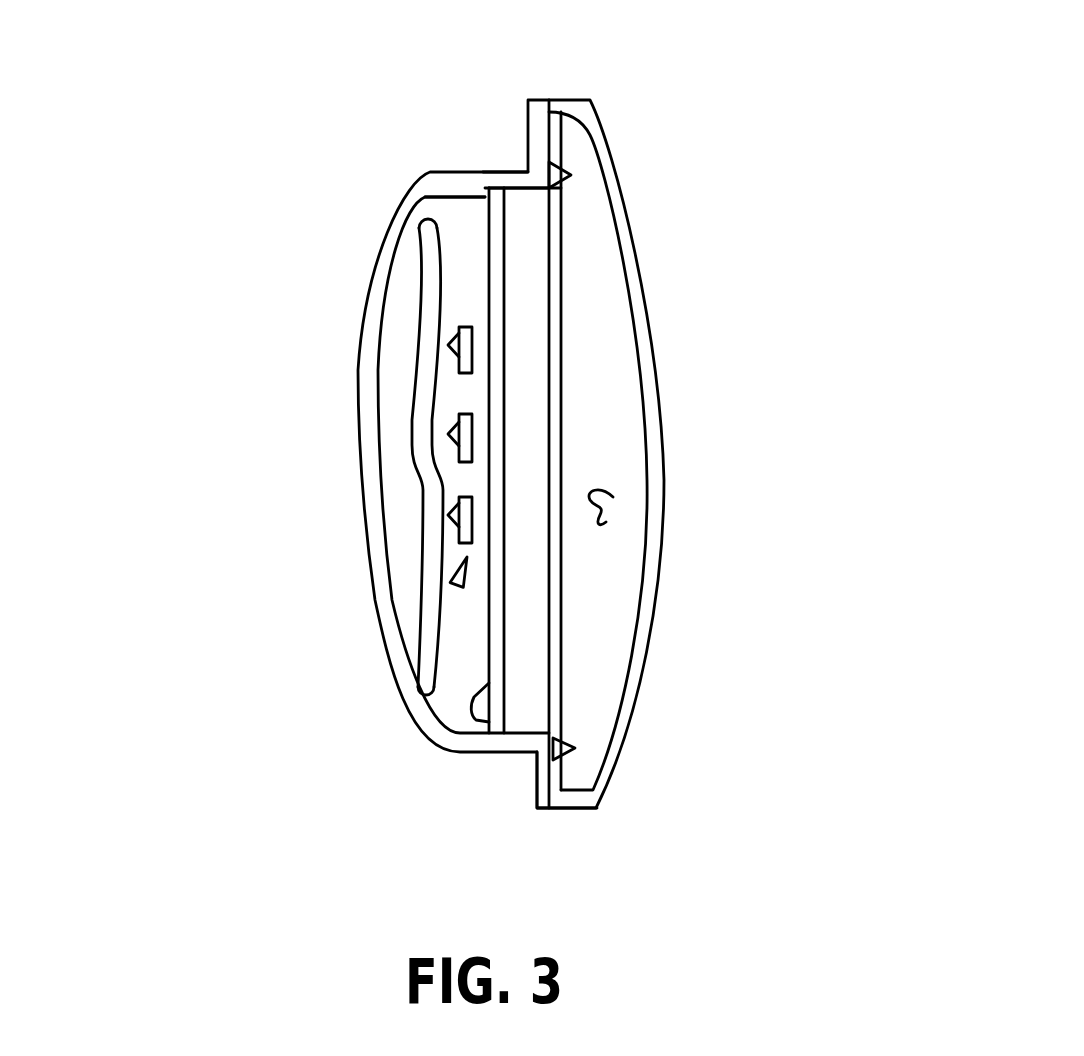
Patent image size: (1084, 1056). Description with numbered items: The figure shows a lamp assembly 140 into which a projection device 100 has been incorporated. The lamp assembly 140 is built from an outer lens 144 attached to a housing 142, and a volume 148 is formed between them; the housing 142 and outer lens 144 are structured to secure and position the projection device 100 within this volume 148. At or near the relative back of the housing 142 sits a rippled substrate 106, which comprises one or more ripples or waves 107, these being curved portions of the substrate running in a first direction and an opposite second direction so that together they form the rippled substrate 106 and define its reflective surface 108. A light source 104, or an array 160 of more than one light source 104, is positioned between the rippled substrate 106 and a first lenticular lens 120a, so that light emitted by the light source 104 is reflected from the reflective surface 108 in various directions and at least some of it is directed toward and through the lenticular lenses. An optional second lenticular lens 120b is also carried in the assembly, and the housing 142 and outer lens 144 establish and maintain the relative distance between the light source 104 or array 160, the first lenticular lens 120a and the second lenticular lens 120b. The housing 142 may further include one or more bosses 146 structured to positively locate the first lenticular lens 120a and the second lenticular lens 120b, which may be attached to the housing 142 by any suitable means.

The projection device 100 is at (333, 290).
The light source 104 is at (455, 422).
The rippled substrate 106 is at (420, 490).
The ripples or waves 107 is at (447, 392).
The reflective surface 108 is at (443, 284).
The first lenticular lens 120a is at (503, 647).
The second lenticular lens 120b is at (557, 695).
The lamp assembly 140 is at (720, 262).
The housing 142 is at (482, 175).
The outer lens 144 is at (614, 156).
The boss 146 is at (482, 192).
The volume 148 is at (612, 497).
The array of light sources 160 is at (456, 587).